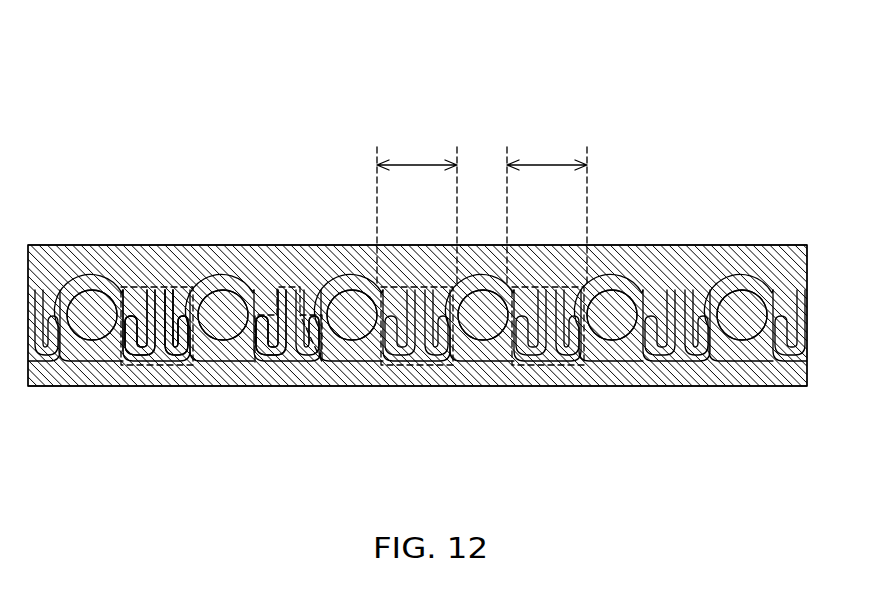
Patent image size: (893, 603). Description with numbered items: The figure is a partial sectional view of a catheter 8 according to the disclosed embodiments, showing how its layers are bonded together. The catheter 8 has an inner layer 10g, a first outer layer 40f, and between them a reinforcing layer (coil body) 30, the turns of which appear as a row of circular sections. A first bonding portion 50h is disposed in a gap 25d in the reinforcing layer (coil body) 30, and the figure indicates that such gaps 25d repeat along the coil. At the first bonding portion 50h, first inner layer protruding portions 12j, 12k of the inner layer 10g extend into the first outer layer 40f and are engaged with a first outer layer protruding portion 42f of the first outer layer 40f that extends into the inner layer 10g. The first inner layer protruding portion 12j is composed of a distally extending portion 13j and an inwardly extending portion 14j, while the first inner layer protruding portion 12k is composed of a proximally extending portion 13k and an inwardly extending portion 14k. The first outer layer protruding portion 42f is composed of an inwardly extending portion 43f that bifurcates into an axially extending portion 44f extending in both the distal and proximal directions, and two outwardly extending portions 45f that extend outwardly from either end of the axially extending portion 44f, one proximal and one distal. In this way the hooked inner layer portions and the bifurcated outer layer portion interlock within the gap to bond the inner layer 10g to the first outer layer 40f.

The catheter 8 is at (422, 48).
The inner layer 10g is at (757, 370).
The first outer layer 40f is at (755, 260).
The reinforcing layer (coil body) 30 is at (742, 323).
The first bonding portion 50h is at (450, 365).
The gap 25d is at (482, 206).
The first inner layer protruding portion 12k is at (156, 300).
The proximally extending portion 13k is at (120, 292).
The inwardly extending portion 14k is at (147, 317).
The first inner layer protruding portion 12j is at (202, 292).
The distally extending portion 13j is at (190, 292).
The inwardly extending portion 14j is at (168, 300).
The first outer layer protruding portion 42f is at (310, 366).
The inwardly extending portion 43f is at (290, 312).
The axially extending portion 44f is at (268, 362).
The outwardly extending portions 45f is at (262, 333).